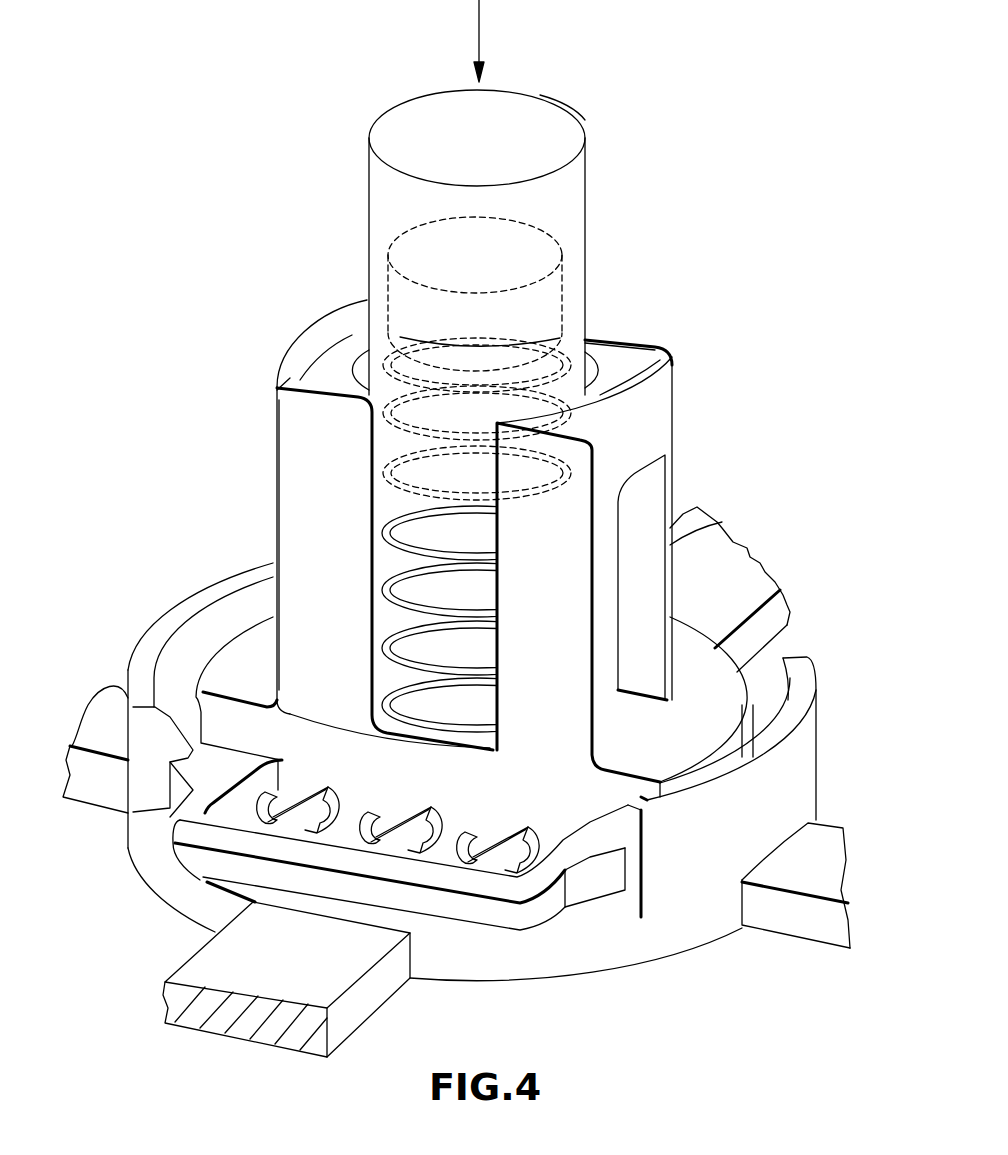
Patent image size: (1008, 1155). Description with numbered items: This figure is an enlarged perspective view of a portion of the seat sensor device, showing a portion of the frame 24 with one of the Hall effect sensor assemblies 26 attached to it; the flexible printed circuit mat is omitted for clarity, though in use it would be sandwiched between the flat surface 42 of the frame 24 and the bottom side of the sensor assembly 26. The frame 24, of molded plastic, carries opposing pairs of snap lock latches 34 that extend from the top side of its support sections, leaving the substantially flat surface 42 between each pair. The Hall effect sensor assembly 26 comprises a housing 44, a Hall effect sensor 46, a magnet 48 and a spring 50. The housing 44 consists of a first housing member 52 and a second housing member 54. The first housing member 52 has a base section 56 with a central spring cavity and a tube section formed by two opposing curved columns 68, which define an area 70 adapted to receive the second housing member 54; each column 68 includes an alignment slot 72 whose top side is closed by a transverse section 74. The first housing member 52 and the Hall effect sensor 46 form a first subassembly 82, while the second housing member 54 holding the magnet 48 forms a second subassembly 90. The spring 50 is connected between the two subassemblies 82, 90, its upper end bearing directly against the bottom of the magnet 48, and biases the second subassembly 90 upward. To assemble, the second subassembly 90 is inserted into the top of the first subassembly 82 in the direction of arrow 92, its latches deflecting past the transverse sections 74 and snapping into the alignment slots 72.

The frame 24 is at (808, 944).
The Hall effect sensor assembly 26 is at (287, 341).
The snap lock latches 34 is at (194, 598).
The flat surface 42 is at (596, 912).
The housing 44 is at (662, 342).
The Hall effect sensor 46 is at (466, 782).
The magnet 48 is at (397, 240).
The spring 50 is at (393, 580).
The first housing member 52 is at (612, 357).
The second housing member 54 is at (432, 122).
The base section 56 is at (714, 708).
The columns 68 is at (290, 383).
The area 70 is at (588, 330).
The alignment slot 72 is at (650, 605).
The transverse sections 74 is at (341, 332).
The first subassembly 82 is at (278, 438).
The second subassembly 90 is at (558, 110).
The arrow 92 is at (481, 40).